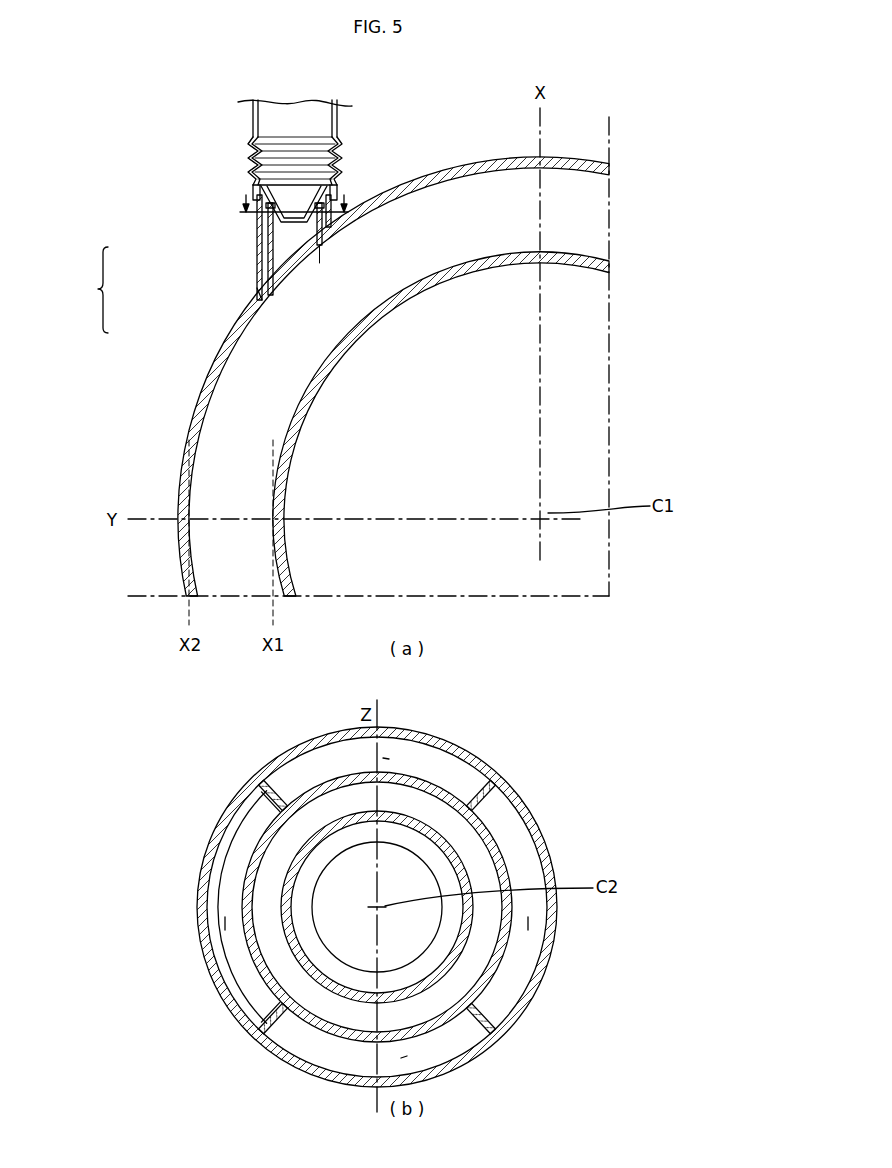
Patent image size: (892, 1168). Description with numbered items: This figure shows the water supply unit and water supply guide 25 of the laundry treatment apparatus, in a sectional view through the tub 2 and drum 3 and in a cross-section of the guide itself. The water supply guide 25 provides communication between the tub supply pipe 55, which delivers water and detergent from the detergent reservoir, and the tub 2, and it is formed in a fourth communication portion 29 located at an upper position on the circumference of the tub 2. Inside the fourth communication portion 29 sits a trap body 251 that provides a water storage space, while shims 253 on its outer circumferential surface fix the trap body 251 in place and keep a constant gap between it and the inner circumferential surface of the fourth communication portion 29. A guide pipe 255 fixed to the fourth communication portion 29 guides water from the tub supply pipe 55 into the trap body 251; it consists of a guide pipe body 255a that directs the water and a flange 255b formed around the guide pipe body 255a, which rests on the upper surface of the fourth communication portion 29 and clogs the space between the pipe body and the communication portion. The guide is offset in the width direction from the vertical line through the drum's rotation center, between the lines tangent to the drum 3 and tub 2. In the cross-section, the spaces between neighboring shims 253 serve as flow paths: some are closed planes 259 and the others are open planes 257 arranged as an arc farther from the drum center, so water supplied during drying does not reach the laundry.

The tub 2 is at (571, 162).
The drum 3 is at (572, 258).
The water supply guide 25 is at (92, 290).
The fourth communication portion 29 is at (257, 226).
The tub supply pipe 55 is at (252, 152).
The trap body 251 is at (280, 244).
The shims 253 is at (263, 290).
The guide pipe 255 is at (300, 199).
The guide pipe body 255a is at (336, 188).
The flange 255b is at (250, 177).
The open plane 257 is at (226, 927).
The closed plane 259 is at (385, 757).